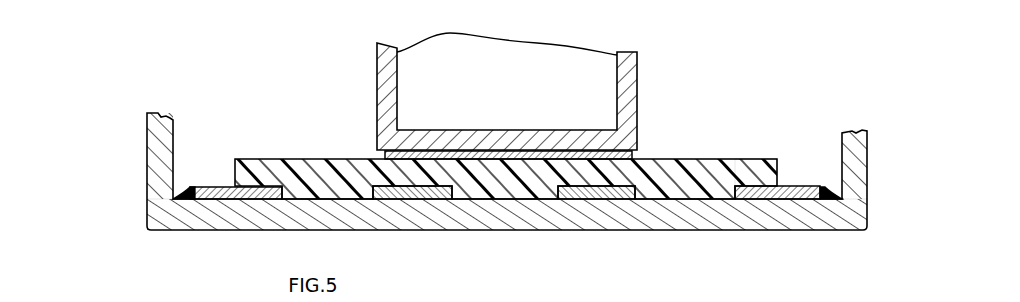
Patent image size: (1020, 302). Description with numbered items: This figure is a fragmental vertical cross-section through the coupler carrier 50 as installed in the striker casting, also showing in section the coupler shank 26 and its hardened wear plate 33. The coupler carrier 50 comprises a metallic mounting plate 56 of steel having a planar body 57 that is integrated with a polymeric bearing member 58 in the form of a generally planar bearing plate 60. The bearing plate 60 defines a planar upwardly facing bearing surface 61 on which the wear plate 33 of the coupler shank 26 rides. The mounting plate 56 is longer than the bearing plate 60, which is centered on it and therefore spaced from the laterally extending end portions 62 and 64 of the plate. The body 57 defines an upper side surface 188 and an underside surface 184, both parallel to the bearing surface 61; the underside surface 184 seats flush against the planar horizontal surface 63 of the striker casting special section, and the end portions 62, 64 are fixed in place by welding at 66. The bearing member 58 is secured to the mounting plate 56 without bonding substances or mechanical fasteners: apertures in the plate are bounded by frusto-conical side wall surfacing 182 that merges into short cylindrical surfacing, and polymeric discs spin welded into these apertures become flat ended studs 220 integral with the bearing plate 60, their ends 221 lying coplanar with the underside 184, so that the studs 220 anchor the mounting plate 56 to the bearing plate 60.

The coupler shank 26 is at (638, 92).
The wear plate 33 is at (502, 148).
The coupler carrier 50 is at (287, 145).
The mounting plate 56 is at (800, 185).
The planar body 57 is at (250, 160).
The polymeric bearing member 58 is at (725, 158).
The bearing plate 60 is at (760, 175).
The bearing surface 61 is at (687, 158).
The end portion 62 is at (207, 203).
The planar horizontal surface 63 is at (333, 199).
The end portion 64 is at (813, 199).
The welding 66 is at (181, 192).
The aperture side wall surfacing 182 is at (392, 198).
The underside surface 184 is at (240, 200).
The upper side surface 188 is at (213, 187).
The stud 220 is at (285, 200).
The stud end 221 is at (305, 200).